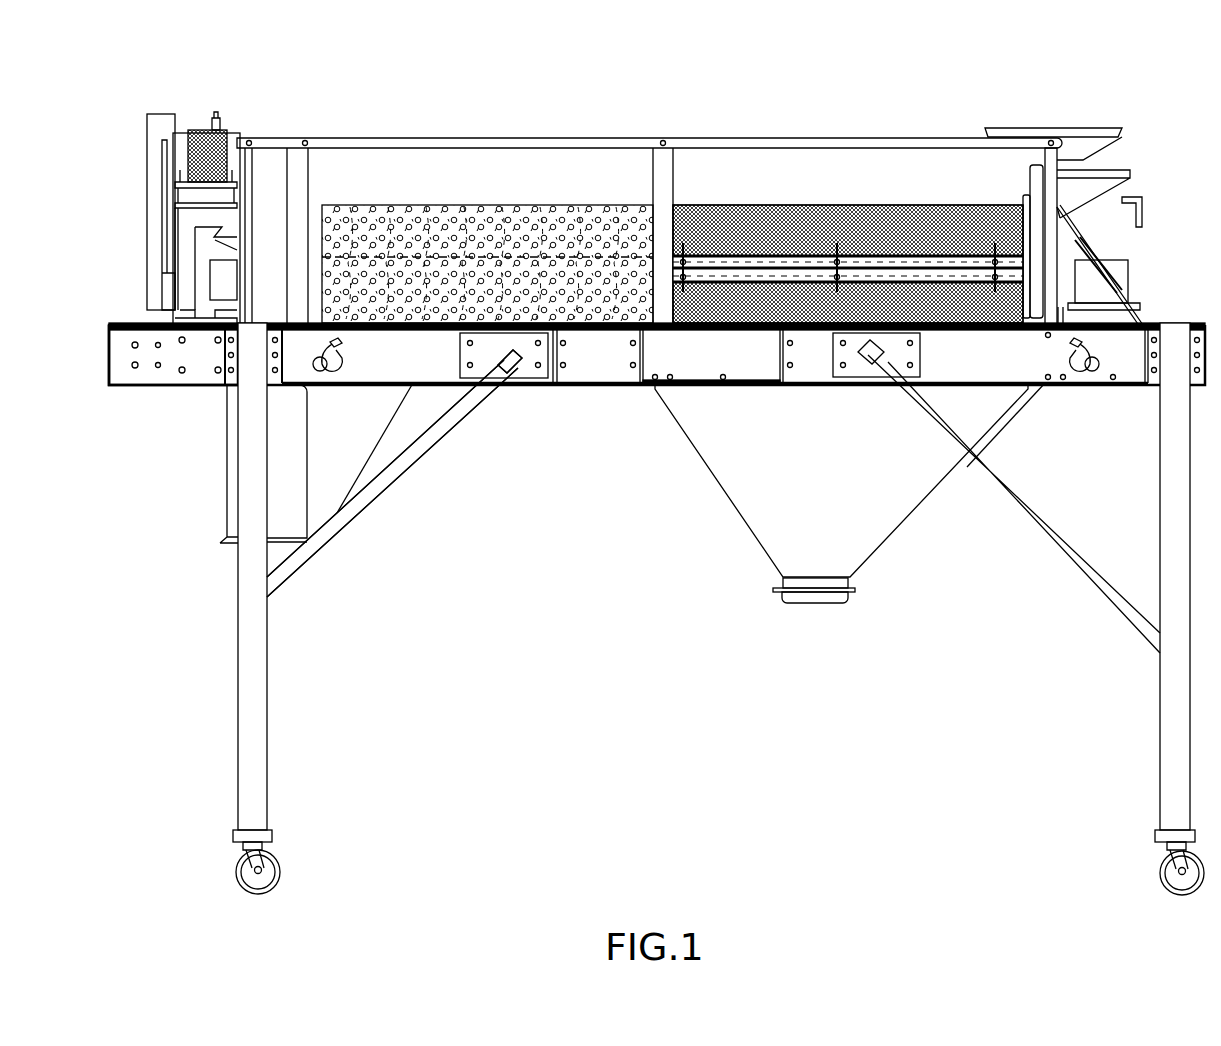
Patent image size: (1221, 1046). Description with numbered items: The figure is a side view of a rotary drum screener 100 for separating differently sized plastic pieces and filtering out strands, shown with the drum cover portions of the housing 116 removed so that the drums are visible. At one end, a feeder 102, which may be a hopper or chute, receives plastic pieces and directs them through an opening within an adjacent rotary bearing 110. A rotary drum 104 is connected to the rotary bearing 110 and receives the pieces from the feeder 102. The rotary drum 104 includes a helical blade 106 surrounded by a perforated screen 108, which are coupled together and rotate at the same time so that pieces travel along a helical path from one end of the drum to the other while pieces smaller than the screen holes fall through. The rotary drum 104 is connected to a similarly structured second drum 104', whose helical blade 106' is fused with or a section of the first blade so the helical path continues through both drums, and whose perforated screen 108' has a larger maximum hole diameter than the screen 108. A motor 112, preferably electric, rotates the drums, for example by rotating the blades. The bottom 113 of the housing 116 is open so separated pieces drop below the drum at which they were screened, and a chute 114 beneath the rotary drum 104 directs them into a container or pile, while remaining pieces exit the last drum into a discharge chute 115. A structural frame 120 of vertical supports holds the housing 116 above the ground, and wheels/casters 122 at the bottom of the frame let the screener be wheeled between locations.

The rotary drum screener 100 is at (164, 72).
The feeder 102 is at (1085, 128).
The rotary drum 104 is at (848, 202).
The second drum 104' is at (487, 200).
The helical blade 106 is at (848, 202).
The helical blade 106' is at (487, 200).
The perforated screen 108 is at (848, 187).
The perforated screen 108' is at (487, 198).
The rotary bearing 110 is at (1030, 200).
The motor 112 is at (212, 130).
The bottom of the housing 113 is at (513, 383).
The chute 114 is at (900, 533).
The discharge chute 115 is at (290, 515).
The housing 116 is at (706, 137).
The structural frame 120 is at (238, 672).
The wheels/casters 122 is at (279, 862).